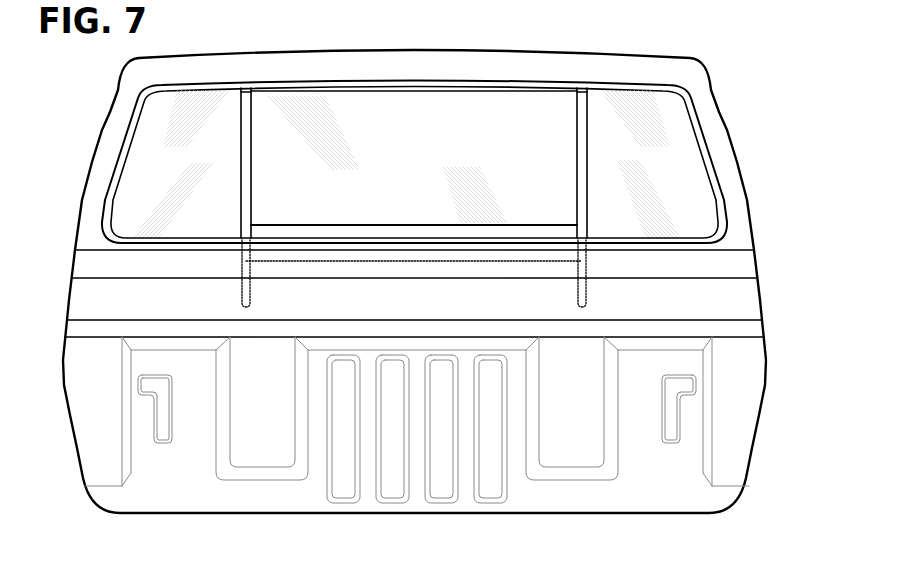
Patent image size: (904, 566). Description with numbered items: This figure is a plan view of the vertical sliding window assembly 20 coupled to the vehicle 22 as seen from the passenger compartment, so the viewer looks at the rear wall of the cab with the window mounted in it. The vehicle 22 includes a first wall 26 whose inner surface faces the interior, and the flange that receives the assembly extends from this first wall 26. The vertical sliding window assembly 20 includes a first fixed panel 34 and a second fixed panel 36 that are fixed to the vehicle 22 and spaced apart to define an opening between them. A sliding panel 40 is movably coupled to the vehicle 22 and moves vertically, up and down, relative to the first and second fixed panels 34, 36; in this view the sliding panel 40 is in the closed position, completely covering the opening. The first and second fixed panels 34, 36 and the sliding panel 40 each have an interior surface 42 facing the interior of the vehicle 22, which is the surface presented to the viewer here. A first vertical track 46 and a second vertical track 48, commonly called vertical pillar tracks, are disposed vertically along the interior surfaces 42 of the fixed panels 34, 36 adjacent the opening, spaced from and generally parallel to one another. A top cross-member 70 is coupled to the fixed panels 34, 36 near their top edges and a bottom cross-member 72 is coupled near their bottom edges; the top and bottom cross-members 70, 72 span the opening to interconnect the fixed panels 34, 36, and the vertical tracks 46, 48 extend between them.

The vertical sliding window assembly 20 is at (438, 154).
The vehicle 22 is at (785, 331).
The first wall 26 is at (743, 285).
The first fixed panel 34 is at (699, 173).
The second fixed panel 36 is at (132, 172).
The sliding panel 40 is at (528, 115).
The interior surface 42 is at (406, 163).
The first vertical track 46 is at (592, 266).
The second vertical track 48 is at (243, 267).
The top cross-member 70 is at (497, 88).
The bottom cross-member 72 is at (348, 228).